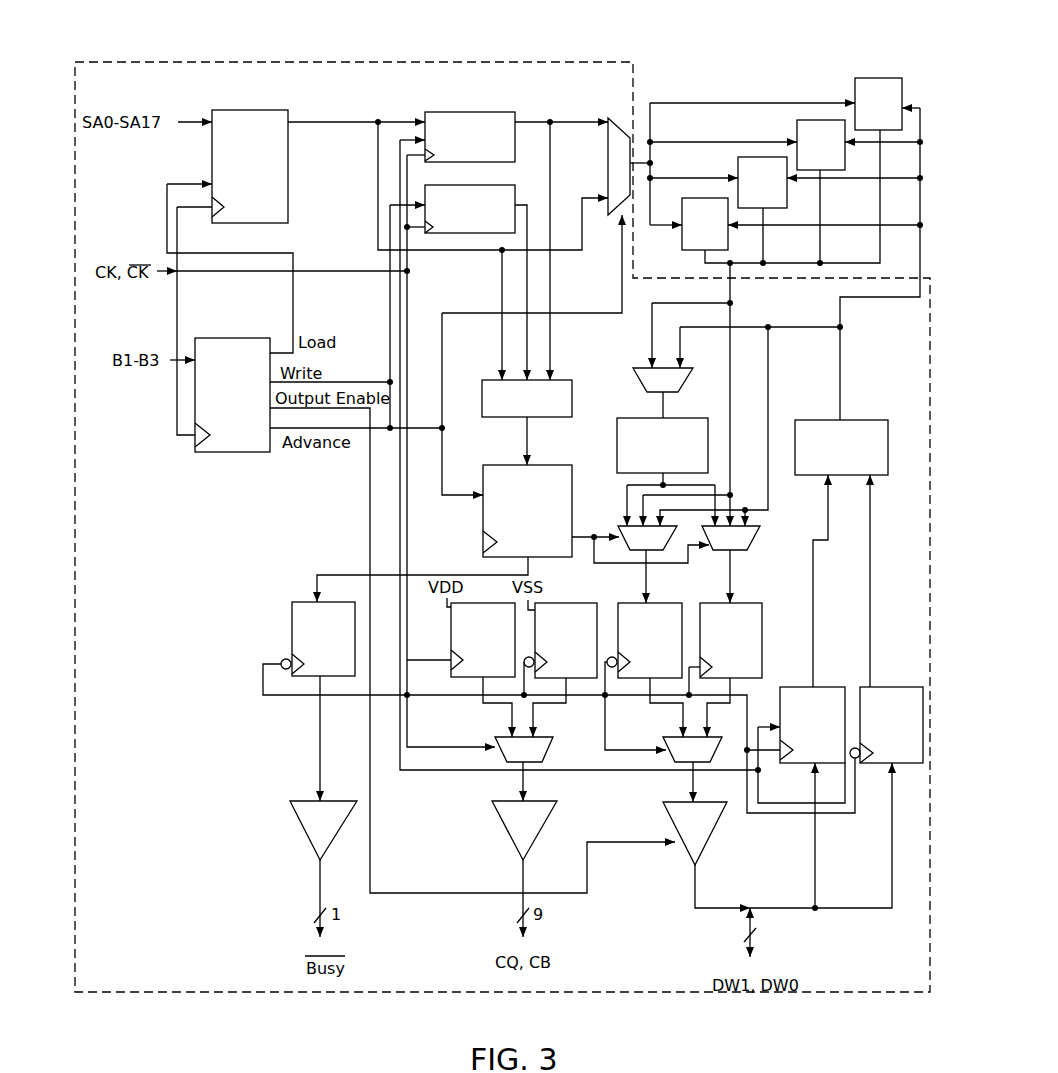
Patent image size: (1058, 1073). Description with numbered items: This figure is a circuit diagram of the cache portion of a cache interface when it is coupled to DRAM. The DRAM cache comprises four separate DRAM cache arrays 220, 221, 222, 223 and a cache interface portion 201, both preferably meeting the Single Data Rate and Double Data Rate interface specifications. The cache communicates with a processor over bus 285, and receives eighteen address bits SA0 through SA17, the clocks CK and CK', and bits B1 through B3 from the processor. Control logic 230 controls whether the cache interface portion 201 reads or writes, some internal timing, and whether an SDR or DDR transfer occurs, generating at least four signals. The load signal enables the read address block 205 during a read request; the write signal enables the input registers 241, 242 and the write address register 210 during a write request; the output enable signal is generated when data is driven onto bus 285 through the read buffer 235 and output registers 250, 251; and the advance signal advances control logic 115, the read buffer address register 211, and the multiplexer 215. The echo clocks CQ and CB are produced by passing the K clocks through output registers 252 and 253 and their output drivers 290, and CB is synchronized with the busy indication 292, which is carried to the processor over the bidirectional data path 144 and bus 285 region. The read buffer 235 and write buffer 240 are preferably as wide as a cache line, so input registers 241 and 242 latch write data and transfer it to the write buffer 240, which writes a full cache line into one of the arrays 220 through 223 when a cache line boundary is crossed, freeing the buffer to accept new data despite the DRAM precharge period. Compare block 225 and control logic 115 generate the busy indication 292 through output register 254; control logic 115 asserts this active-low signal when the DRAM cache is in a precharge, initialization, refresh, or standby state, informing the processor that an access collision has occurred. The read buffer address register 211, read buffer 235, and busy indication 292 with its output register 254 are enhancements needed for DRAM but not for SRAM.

The cache interface portion 201 is at (500, 62).
The read address block 205 is at (275, 110).
The write address register 210 is at (490, 112).
The read buffer address register 211 is at (510, 184).
The multiplexer 215 is at (620, 122).
The DRAM cache array 220 is at (705, 224).
The DRAM cache array 221 is at (762, 182).
The DRAM cache array 222 is at (821, 145).
The DRAM cache array 223 is at (878, 104).
The compare block 225 is at (487, 379).
The control logic 230 is at (242, 338).
The control logic 115 is at (498, 464).
The read buffer 235 is at (633, 418).
The write buffer 240 is at (823, 420).
The output register 250 is at (745, 602).
The output register 251 is at (630, 602).
The output register 252 is at (580, 602).
The output register 253 is at (450, 620).
The output register 254 is at (307, 601).
The input register 241 is at (807, 686).
The input register 242 is at (915, 687).
The output buffer 290 is at (525, 878).
The busy indication 292 is at (320, 878).
The bus 285 is at (748, 930).
The data bus 144 is at (770, 932).